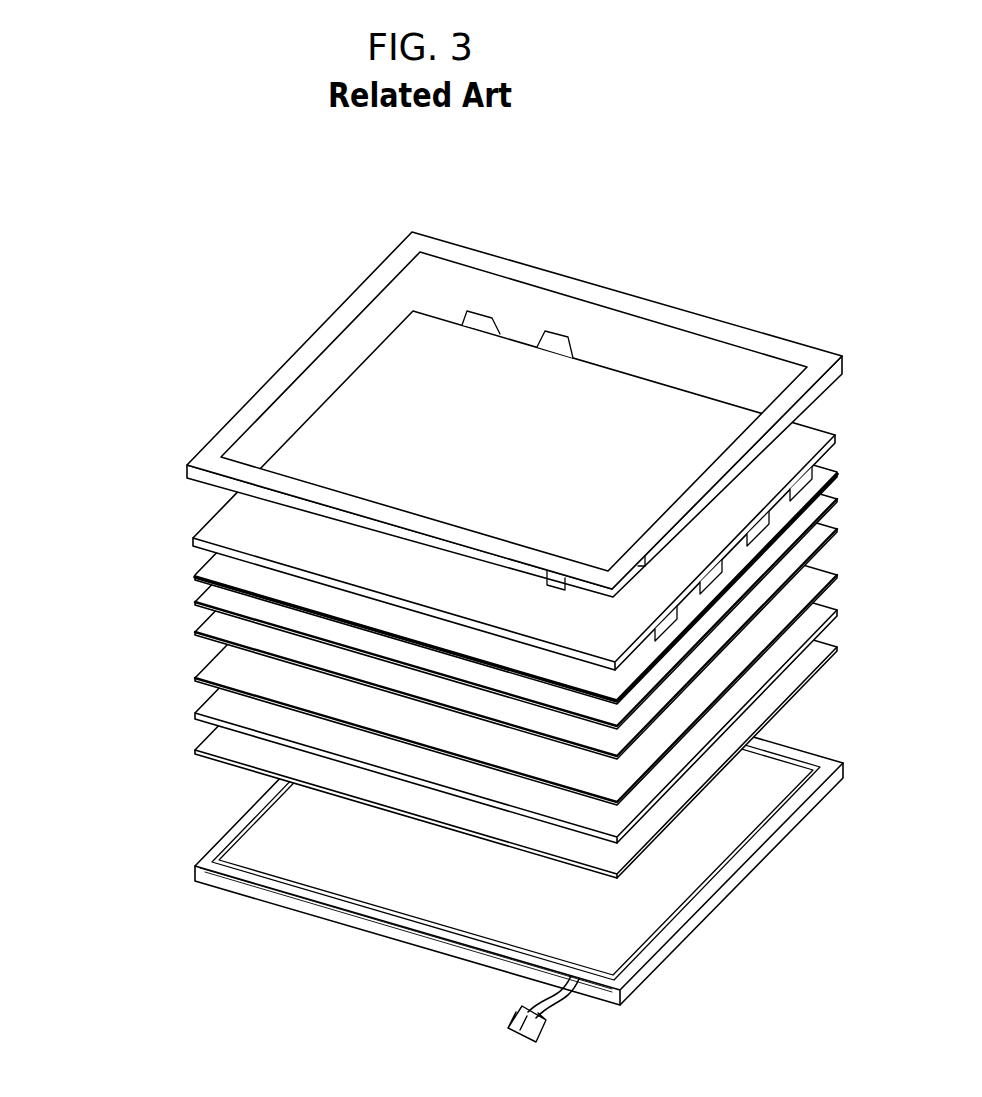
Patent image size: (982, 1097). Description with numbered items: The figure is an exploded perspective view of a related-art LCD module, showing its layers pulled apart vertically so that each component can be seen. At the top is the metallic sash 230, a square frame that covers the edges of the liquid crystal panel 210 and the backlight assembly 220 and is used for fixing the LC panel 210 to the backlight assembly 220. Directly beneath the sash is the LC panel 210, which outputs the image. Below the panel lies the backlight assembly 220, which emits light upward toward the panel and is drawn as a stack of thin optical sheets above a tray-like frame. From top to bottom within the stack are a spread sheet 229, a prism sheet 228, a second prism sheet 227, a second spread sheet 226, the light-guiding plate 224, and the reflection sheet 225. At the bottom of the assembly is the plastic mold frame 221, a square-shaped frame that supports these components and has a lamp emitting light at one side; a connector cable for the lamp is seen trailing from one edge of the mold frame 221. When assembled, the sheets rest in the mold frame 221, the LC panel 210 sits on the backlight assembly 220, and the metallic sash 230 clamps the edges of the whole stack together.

The liquid crystal panel 210 is at (233, 525).
The backlight assembly 220 is at (430, 695).
The plastic mold frame 221 is at (196, 874).
The light-guiding plate 224 is at (218, 704).
The reflection sheet 225 is at (218, 739).
The spread sheet 226 is at (218, 662).
The prism sheet 227 is at (218, 627).
The prism sheet 228 is at (215, 597).
The spread sheet 229 is at (468, 526).
The metallic sash 230 is at (287, 376).